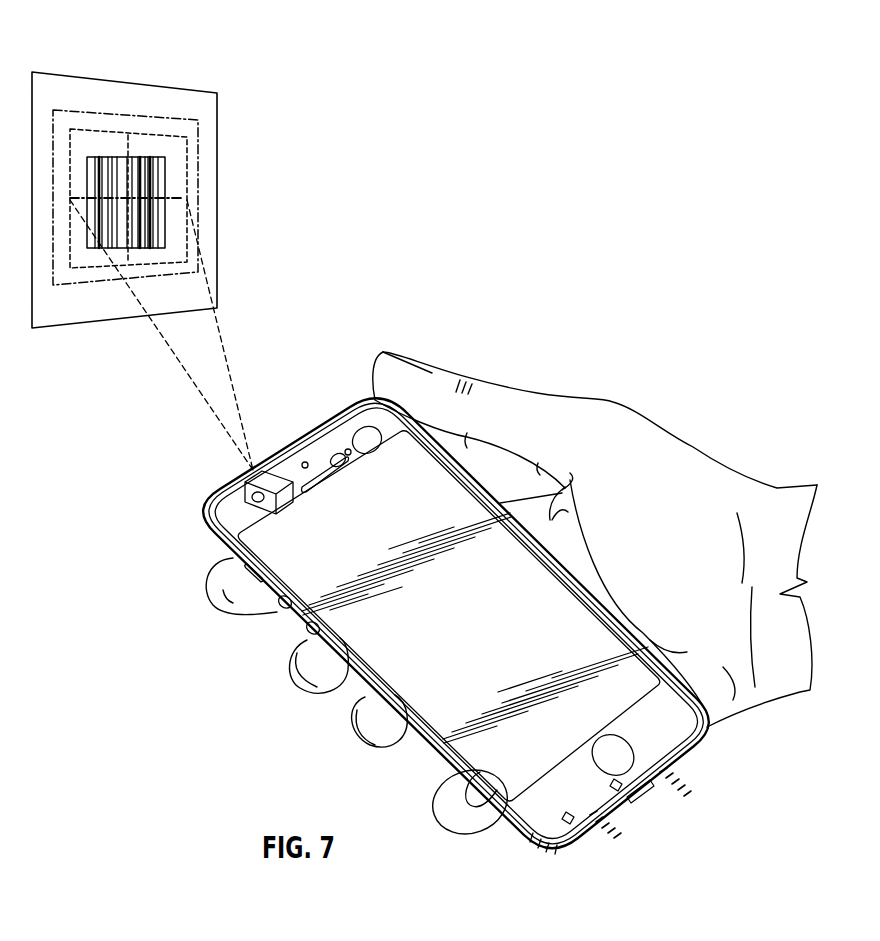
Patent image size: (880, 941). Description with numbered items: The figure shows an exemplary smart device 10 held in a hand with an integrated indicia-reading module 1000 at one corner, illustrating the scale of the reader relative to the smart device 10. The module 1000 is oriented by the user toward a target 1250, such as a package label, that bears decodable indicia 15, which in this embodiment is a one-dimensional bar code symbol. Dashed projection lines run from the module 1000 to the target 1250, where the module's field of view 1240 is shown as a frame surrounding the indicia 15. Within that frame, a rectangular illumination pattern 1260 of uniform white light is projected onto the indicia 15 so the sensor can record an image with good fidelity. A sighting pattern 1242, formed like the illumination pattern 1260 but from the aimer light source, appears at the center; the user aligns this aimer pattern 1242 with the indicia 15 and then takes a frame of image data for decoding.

The smart device 10 is at (417, 638).
The decodable indicia 15 is at (105, 157).
The indicia-reading module 1000 is at (267, 478).
The field of view 1240 is at (70, 285).
The sighting pattern 1242 is at (128, 150).
The target 1250 is at (60, 315).
The illumination pattern 1260 is at (172, 172).